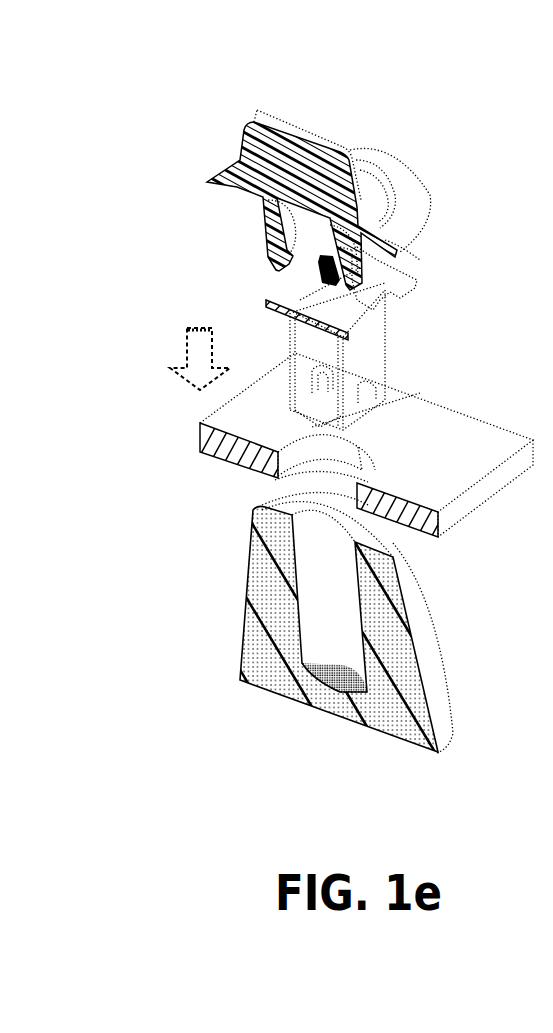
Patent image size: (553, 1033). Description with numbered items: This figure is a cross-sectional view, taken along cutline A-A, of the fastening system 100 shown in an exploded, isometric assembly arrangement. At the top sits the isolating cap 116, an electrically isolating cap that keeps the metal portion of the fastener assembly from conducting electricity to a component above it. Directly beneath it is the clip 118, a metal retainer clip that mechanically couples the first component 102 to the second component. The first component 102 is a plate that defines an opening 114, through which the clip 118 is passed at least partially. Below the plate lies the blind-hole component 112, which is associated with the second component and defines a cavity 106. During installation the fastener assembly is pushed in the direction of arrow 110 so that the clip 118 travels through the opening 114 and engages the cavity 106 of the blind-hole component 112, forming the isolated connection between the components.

The fastening system 100 is at (184, 44).
The first component 102 is at (494, 425).
The cavity 106 is at (312, 520).
The arrow 110 is at (195, 348).
The blind-hole component 112 is at (430, 651).
The opening 114 is at (282, 452).
The isolating cap 116 is at (322, 111).
The clip 118 is at (386, 318).